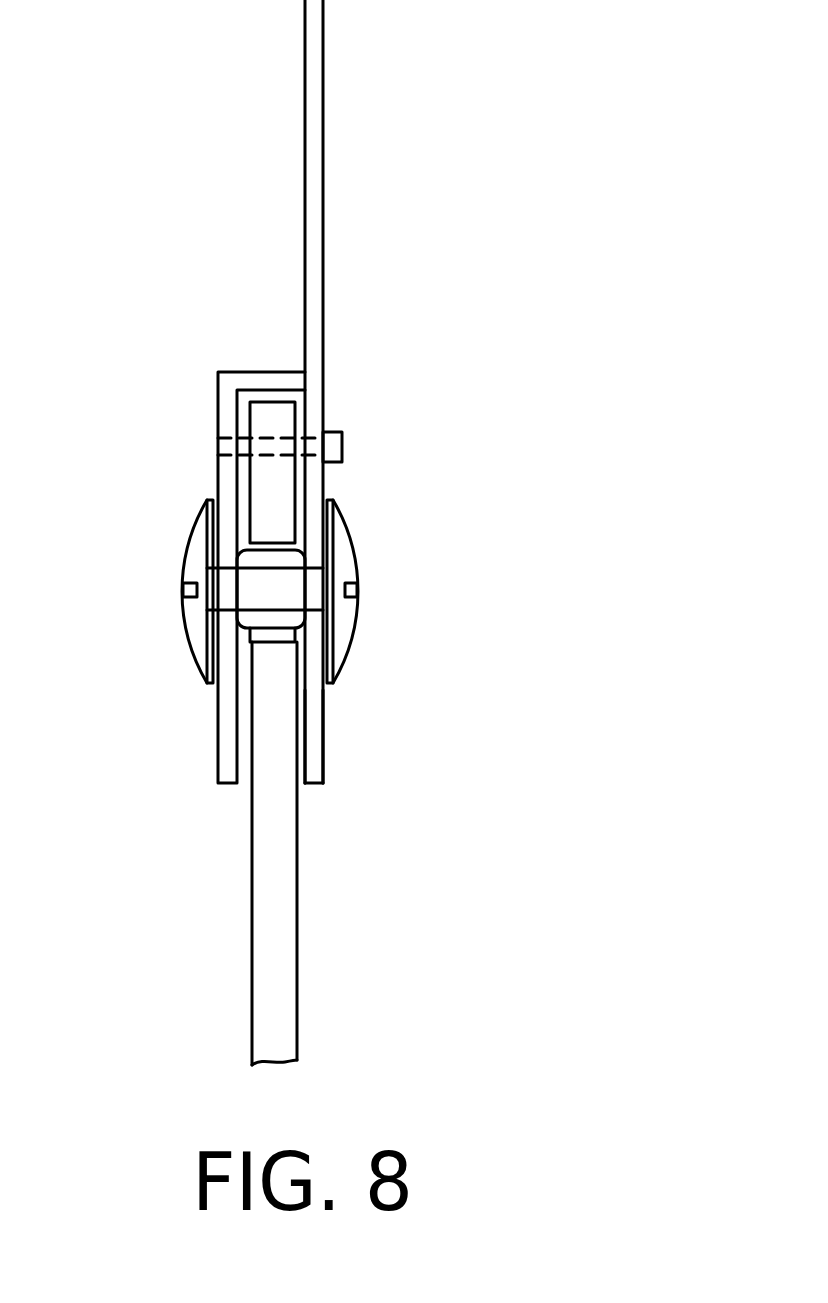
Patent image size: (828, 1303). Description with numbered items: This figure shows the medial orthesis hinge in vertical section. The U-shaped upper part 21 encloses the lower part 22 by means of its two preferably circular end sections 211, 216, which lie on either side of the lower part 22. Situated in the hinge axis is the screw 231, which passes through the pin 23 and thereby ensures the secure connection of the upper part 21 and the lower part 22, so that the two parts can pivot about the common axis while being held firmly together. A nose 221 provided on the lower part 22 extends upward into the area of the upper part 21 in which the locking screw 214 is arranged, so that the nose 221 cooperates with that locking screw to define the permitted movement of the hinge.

The upper part 21 is at (312, 8).
The end section 211 is at (313, 757).
The locking screw 214 is at (343, 446).
The end section 216 is at (225, 756).
The lower part 22 is at (273, 1040).
The nose 221 is at (268, 420).
The pin 23 is at (253, 560).
The screw 231 is at (357, 590).